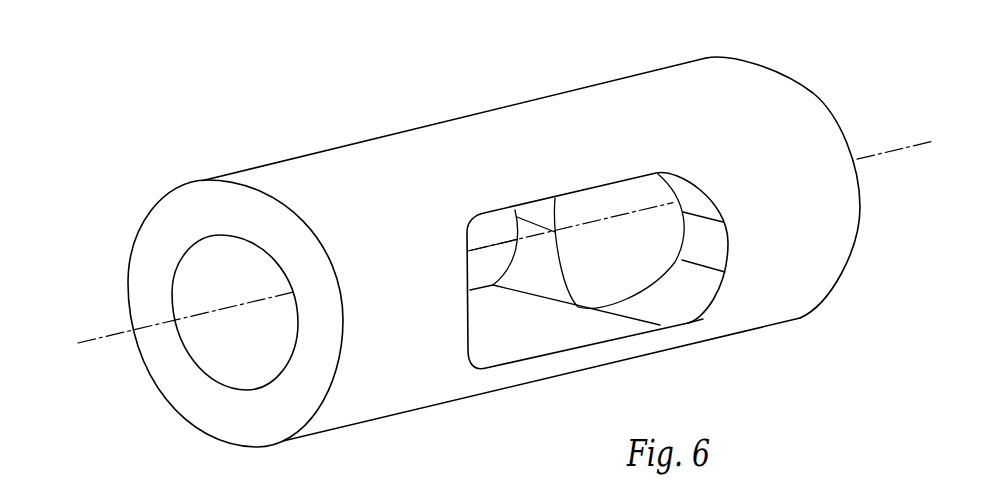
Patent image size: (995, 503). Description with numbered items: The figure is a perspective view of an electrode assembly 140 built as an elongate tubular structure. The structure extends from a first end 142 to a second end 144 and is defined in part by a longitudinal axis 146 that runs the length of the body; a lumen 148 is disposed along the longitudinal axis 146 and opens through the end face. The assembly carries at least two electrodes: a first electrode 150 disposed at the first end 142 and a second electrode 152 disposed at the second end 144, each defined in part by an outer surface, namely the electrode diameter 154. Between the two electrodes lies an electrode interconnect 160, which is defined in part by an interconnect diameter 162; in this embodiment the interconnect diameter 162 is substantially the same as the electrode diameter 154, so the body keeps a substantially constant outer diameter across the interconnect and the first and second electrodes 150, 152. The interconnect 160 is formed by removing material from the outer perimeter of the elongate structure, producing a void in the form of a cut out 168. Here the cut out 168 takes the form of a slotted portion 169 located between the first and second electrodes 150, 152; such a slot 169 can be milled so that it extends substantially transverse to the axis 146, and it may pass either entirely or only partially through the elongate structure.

The electrode assembly 140 is at (272, 102).
The first end 142 is at (813, 97).
The second end 144 is at (128, 287).
The longitudinal axis 146 is at (103, 339).
The lumen 148 is at (263, 363).
The first electrode 150 is at (750, 54).
The second electrode 152 is at (143, 221).
The diameter 154 is at (376, 421).
The electrode interconnect 160 is at (517, 120).
The interconnect diameter 162 is at (523, 377).
The cut out 168 is at (565, 338).
The slotted portion 169 is at (696, 298).